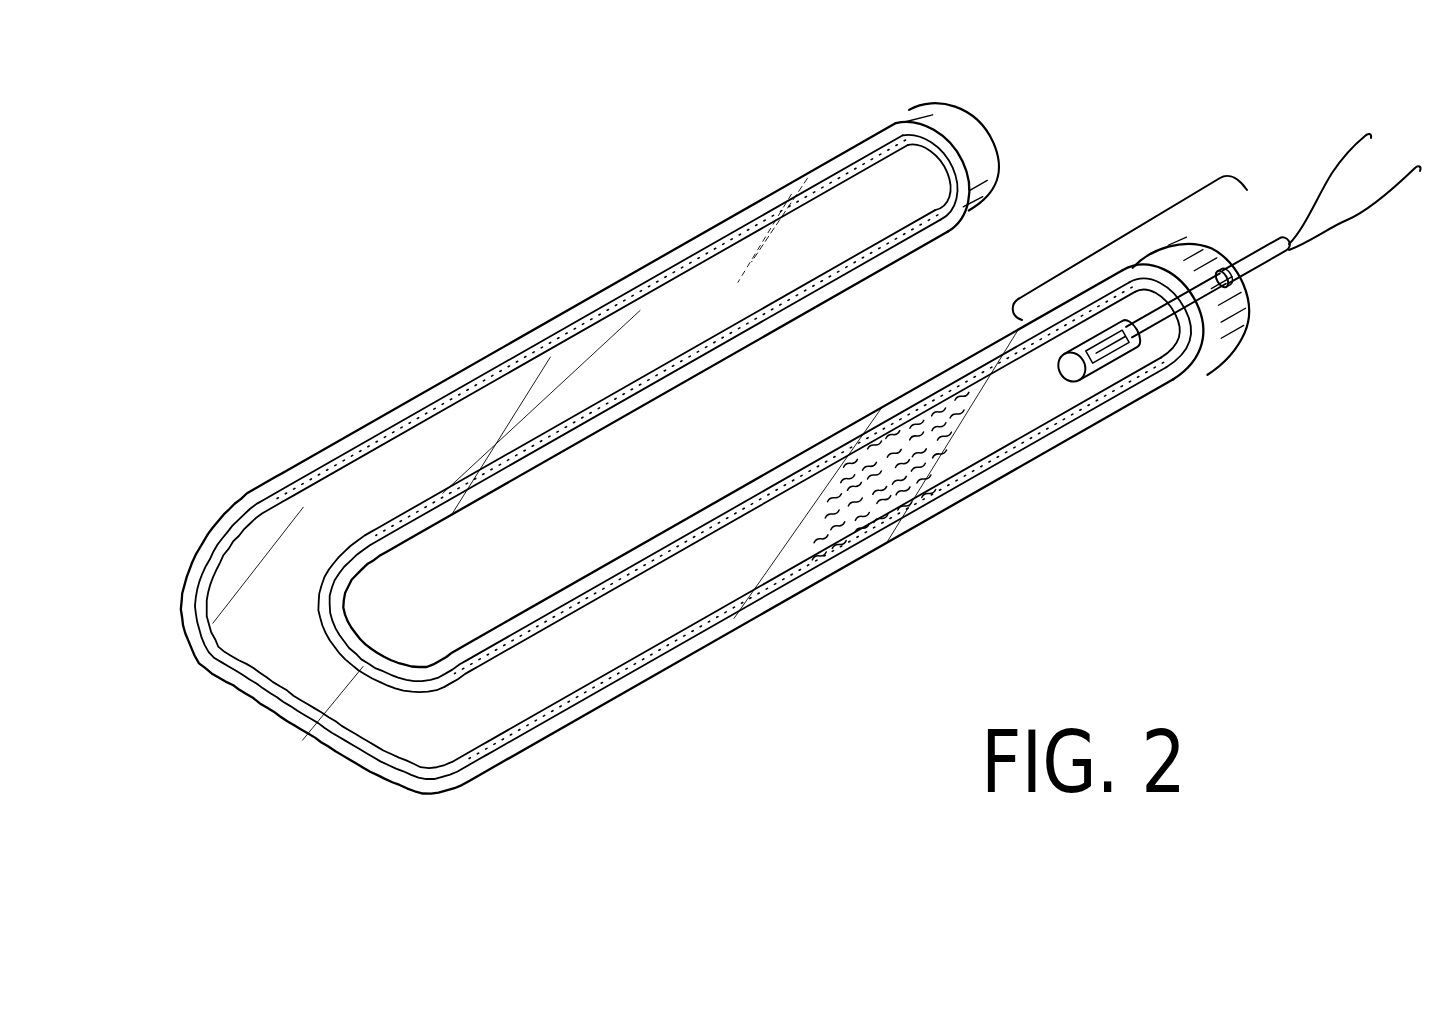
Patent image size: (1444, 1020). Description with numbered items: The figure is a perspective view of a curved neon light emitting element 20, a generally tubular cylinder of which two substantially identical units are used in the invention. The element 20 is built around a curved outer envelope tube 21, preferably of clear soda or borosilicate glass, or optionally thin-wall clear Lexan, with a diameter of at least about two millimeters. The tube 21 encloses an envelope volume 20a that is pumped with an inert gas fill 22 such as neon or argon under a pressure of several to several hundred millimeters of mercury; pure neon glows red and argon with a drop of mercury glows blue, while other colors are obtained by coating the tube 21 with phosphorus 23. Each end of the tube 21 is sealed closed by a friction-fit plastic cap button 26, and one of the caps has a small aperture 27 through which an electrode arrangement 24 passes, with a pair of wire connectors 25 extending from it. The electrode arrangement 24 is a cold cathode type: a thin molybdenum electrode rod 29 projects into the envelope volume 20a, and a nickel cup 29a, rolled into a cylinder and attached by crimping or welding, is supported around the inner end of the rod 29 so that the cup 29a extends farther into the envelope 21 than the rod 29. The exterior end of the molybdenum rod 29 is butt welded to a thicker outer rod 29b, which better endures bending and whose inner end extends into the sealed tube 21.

The neon light emitting element 20 is at (461, 309).
The enclosed envelope volume 20a is at (660, 632).
The outer envelope tube 21 is at (757, 605).
The inert gas fill 22 is at (885, 495).
The phosphorus coating 23 is at (596, 406).
The electrode arrangement 24 is at (1110, 246).
The wire connectors 25 is at (1337, 173).
The plastic cap button 26 is at (979, 137).
The aperture 27 is at (1247, 289).
The electrode rod 29 is at (1168, 312).
The cup 29a is at (1107, 354).
The outer rod 29b is at (1260, 268).